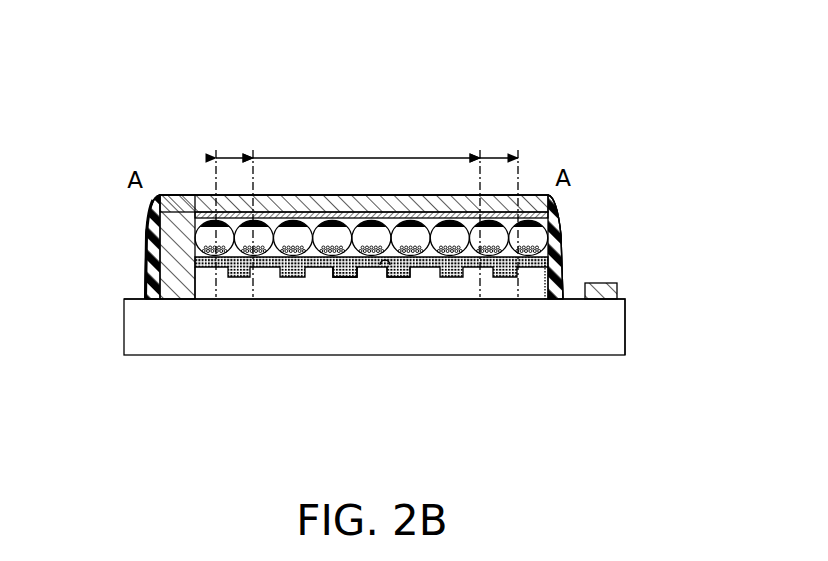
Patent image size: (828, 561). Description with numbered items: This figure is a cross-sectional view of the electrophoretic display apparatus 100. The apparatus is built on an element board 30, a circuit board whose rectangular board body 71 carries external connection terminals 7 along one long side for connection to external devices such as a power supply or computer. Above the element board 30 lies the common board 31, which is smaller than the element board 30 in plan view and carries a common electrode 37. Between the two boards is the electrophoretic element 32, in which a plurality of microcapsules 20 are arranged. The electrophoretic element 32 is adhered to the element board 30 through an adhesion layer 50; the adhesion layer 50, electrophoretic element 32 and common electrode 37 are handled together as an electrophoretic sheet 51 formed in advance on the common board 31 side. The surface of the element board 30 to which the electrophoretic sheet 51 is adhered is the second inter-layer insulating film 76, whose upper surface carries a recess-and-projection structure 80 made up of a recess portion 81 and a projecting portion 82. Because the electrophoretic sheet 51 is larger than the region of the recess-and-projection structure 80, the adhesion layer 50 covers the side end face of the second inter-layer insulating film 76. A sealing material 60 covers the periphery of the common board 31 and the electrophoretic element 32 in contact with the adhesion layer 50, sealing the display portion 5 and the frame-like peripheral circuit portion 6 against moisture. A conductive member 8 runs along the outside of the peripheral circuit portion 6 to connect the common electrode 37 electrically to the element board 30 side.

The electrophoretic display apparatus 100 is at (552, 118).
The electrophoretic sheet 51 is at (165, 193).
The conductive member 8 is at (155, 245).
The sealing material 60 is at (150, 278).
The common board 31 is at (533, 193).
The electrophoretic element 32 is at (192, 220).
The common electrode 37 is at (553, 213).
The microcapsules 20 is at (267, 258).
The adhesion layer 50 is at (552, 262).
The recess portion 81 is at (352, 274).
The projecting portion 82 is at (385, 266).
The recess-and-projection structure 80 is at (333, 393).
The second inter-layer insulating film 76 is at (535, 287).
The element board 30 is at (122, 338).
The board body 71 is at (615, 333).
The external connection terminals 7 is at (617, 290).
The display portion 5 is at (371, 157).
The peripheral circuit portion 6 is at (234, 157).